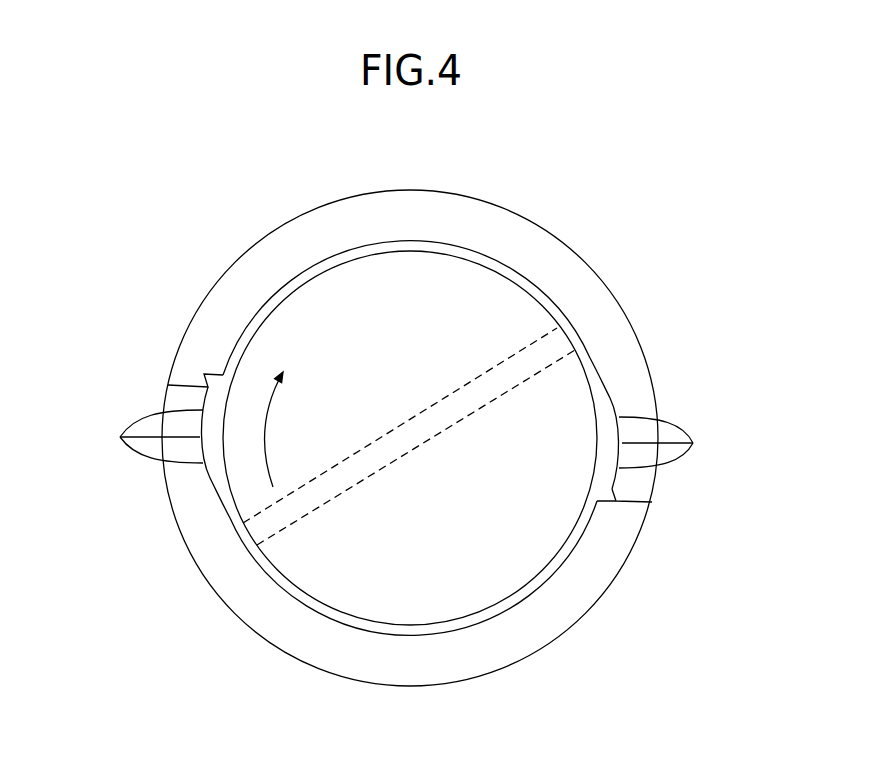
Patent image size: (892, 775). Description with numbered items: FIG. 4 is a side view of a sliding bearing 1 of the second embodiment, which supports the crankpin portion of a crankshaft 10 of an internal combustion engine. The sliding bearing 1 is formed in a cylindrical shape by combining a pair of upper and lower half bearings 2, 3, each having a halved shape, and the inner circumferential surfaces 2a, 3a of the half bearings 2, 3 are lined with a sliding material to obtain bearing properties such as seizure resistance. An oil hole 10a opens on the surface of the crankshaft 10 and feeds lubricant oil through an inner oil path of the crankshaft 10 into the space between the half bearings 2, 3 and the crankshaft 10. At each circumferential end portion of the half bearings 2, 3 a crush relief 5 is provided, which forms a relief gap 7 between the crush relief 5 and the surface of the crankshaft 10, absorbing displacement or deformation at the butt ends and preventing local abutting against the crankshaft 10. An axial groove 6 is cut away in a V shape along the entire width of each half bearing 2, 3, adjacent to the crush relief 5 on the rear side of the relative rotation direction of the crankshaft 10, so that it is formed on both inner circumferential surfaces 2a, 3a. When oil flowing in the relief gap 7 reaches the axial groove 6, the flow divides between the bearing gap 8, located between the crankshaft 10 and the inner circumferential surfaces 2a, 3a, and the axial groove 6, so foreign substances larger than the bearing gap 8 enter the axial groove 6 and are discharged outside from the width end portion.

The sliding bearing 1 is at (608, 197).
The upper half bearing 2 is at (586, 261).
The inner circumferential surface of upper half bearing 2a is at (314, 267).
The lower half bearing 3 is at (578, 625).
The inner circumferential surface of lower half bearing 3a is at (287, 590).
The crush relief 5 is at (120, 437).
The axial groove 6 is at (168, 385).
The relief gap 7 is at (207, 440).
The bearing gap 8 is at (563, 552).
The crankshaft 10 is at (450, 592).
The oil hole 10a is at (563, 338).